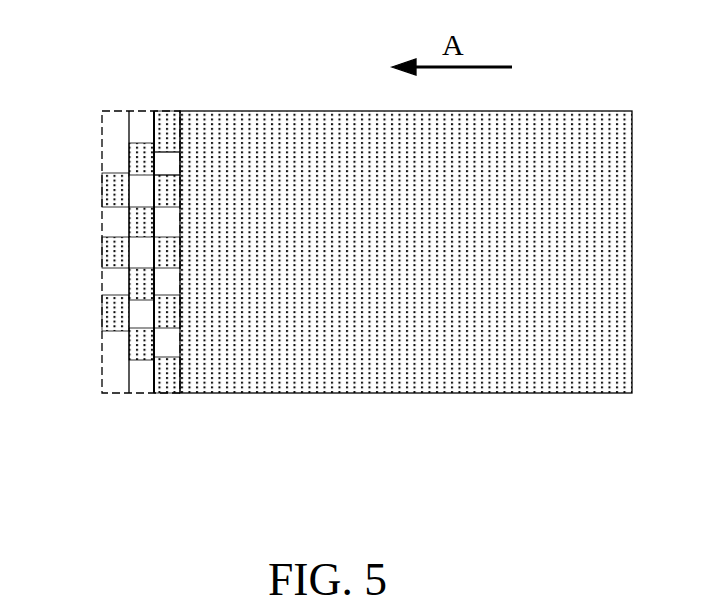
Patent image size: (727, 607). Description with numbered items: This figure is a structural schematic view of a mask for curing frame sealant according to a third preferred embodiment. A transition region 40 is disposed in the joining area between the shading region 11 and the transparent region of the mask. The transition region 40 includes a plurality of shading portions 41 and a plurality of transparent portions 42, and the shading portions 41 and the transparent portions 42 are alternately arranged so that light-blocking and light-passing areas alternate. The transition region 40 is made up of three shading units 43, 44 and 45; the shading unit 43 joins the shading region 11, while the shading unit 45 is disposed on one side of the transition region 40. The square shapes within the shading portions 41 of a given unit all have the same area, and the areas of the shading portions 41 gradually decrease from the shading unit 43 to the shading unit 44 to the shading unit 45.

The shading region 11 is at (356, 141).
The transition region 40 is at (106, 78).
The shading portions 41 is at (173, 119).
The transparent portions 42 is at (178, 154).
The shading unit 43 is at (170, 409).
The shading unit 44 is at (139, 410).
The shading unit 45 is at (103, 406).